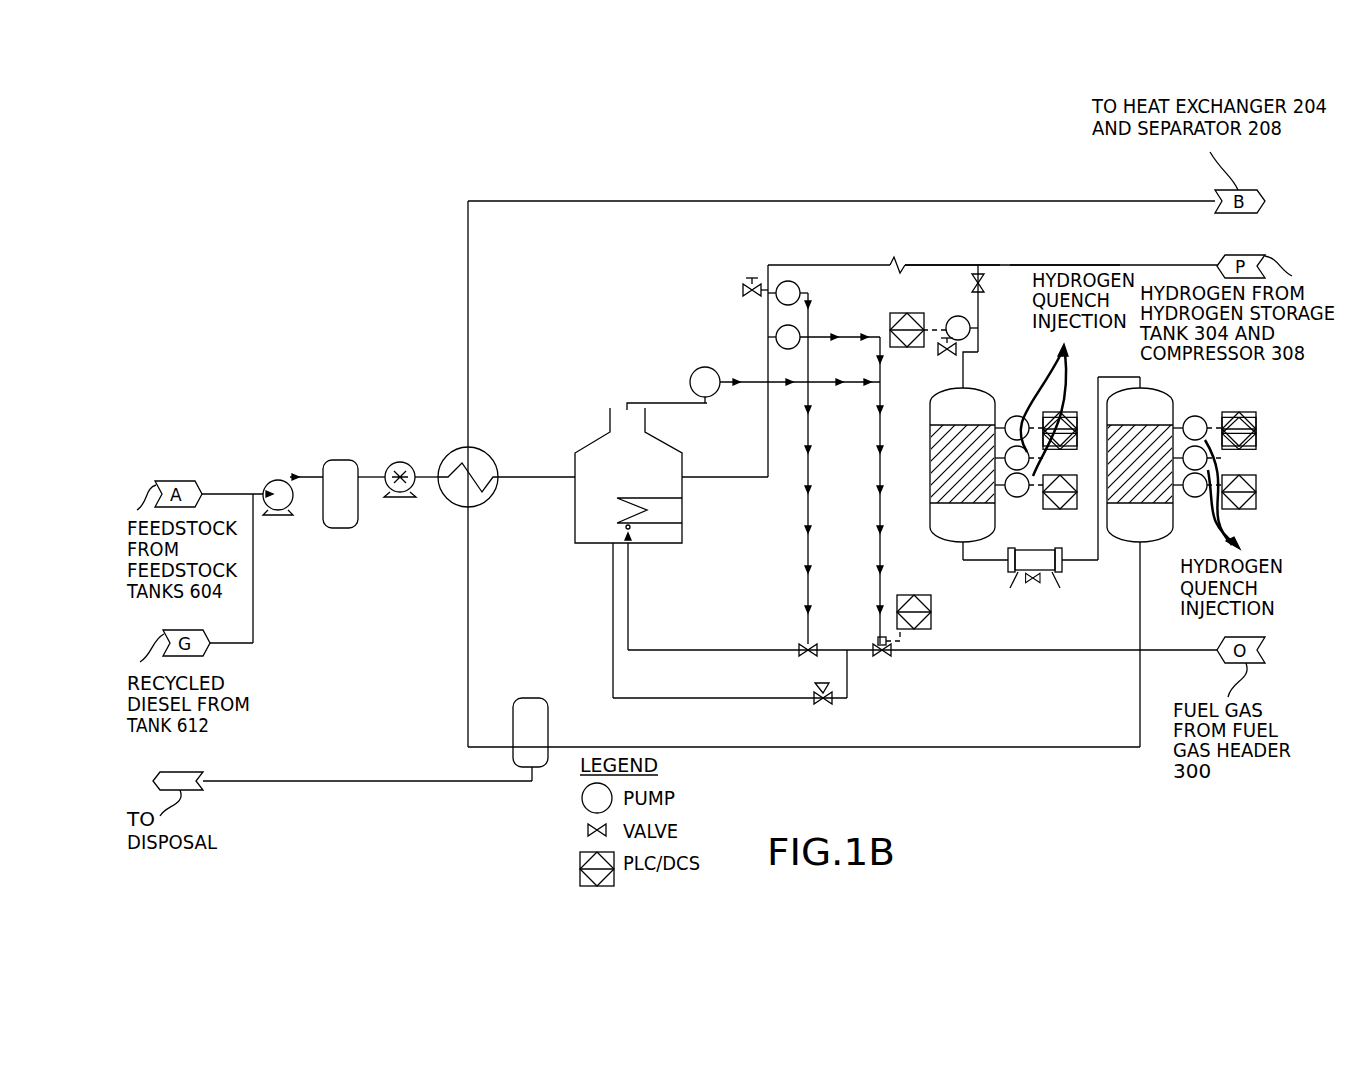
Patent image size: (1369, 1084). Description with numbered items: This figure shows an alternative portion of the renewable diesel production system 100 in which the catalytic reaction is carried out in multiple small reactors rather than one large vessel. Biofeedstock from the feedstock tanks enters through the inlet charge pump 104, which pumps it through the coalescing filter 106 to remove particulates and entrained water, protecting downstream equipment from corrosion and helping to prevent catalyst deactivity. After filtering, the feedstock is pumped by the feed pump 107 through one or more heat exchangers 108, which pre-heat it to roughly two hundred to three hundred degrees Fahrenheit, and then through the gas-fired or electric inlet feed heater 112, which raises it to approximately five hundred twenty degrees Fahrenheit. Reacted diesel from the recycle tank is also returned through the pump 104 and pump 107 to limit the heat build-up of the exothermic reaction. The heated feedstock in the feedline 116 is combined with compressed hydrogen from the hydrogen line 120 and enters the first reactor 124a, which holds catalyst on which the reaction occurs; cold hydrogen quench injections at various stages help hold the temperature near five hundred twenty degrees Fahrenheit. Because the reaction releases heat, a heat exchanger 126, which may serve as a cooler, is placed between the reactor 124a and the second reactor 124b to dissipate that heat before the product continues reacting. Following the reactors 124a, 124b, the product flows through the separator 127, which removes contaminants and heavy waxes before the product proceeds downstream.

The renewable diesel production system 100 is at (338, 338).
The inlet charge pump 104 is at (268, 480).
The coalescing filter 106 is at (337, 460).
The feed pump 107 is at (398, 461).
The heat exchanger 108 is at (453, 450).
The inlet feed heater 112 is at (598, 437).
The feedline 116 is at (955, 265).
The hydrogen line 120 is at (1062, 265).
The reactor 124a is at (963, 387).
The reactor 124b is at (1120, 544).
The heat exchanger 126 is at (1035, 549).
The separator 127 is at (530, 698).